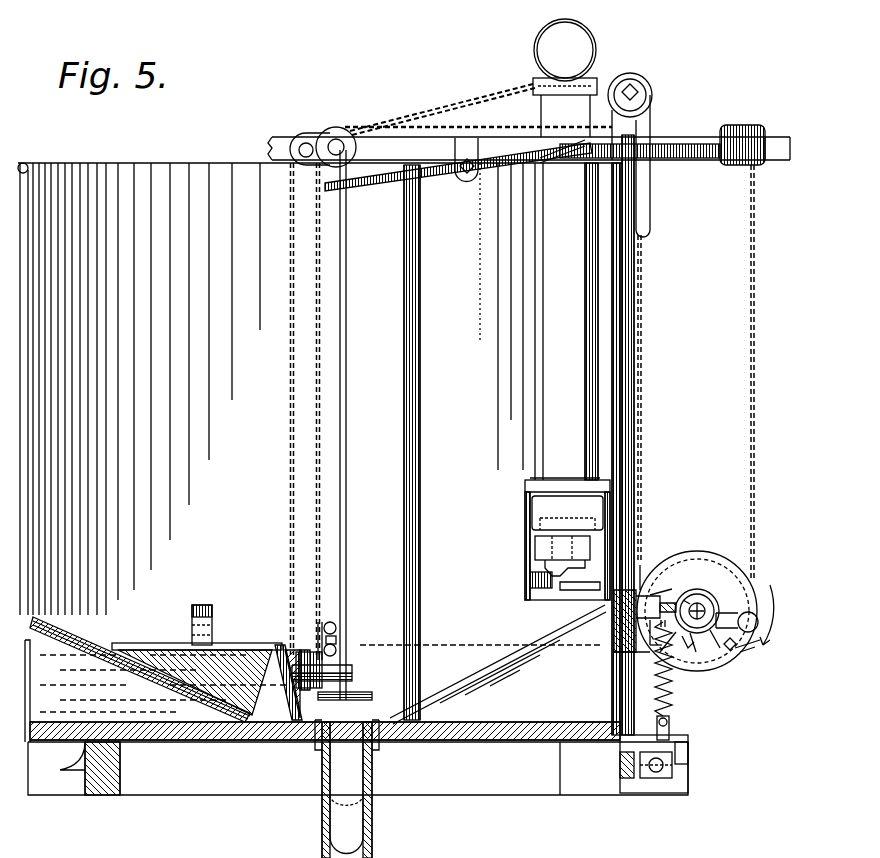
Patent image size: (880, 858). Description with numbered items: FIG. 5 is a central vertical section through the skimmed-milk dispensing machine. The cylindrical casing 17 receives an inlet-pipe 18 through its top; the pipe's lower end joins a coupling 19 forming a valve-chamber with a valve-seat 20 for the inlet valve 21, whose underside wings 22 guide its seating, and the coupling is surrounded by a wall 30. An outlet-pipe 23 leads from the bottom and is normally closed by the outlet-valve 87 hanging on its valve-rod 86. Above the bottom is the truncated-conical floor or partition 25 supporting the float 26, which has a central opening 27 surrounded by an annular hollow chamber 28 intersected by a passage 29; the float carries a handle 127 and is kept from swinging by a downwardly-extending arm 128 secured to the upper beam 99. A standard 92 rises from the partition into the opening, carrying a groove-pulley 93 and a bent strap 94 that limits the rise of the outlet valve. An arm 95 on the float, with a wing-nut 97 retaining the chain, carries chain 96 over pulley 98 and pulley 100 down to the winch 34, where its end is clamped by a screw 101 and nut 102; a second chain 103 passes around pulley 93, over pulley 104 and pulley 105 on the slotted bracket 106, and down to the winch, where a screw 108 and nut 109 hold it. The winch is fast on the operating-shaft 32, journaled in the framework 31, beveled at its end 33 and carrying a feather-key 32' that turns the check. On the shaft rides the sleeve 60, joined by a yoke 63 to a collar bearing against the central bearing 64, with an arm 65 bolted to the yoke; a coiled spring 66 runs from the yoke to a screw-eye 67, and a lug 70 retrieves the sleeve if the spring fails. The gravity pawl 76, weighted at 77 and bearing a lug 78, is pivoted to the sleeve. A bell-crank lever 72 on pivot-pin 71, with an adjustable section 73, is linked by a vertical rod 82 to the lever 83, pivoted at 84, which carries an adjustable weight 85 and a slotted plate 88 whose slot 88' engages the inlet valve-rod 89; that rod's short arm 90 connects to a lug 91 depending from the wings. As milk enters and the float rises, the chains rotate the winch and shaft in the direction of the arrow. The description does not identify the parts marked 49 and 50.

The casing 17 is at (177, 163).
The inlet-pipe 18 is at (588, 36).
The coupling 19 is at (545, 478).
The valve-seat 20 is at (532, 540).
The valve 21 is at (556, 522).
The wings 22 is at (545, 566).
The outlet-pipe 23 is at (330, 795).
The floor or partition 25 is at (78, 648).
The float 26 is at (137, 643).
The central opening 27 is at (276, 645).
The annular hollow chamber 28 is at (184, 643).
The passage 29 is at (432, 660).
The wall 30 is at (525, 520).
The framework 31 is at (640, 636).
The operating-shaft 32 is at (707, 572).
The feather-key 32' is at (786, 602).
The beveled end 33 is at (707, 560).
The winch 34 is at (725, 652).
The lever 49 is at (655, 590).
The bracket 50 is at (650, 645).
The sleeve 60 is at (702, 606).
The yoke 63 is at (680, 640).
The central bearing 64 is at (686, 570).
The arm 65 is at (664, 598).
The coiled spring 66 is at (670, 704).
The screw-eye 67 is at (672, 730).
The projecting lug 70 is at (690, 592).
The pivot-pin 71 is at (688, 760).
The bell-crank lever 72 is at (663, 778).
The adjustable section 73 is at (655, 660).
The gravity dog or pawl 76 is at (745, 656).
The weight 77 is at (758, 622).
The lug 78 is at (690, 640).
The vertical rod 82 is at (634, 412).
The lever 83 is at (708, 152).
The pivot 84 is at (466, 182).
The adjustable weight 85 is at (770, 138).
The valve-rod 86 is at (348, 410).
The outlet-valve 87 is at (375, 684).
The slotted bracket 88 is at (478, 109).
The slot 88' is at (526, 194).
The valve-rod 89 is at (592, 305).
The short arm 90 is at (580, 590).
The lug 91 is at (548, 580).
The standard 92 is at (290, 700).
The groove-pulley 93 is at (314, 645).
The bent strap 94 is at (272, 662).
The arm 95 is at (248, 640).
The chain 96 is at (322, 490).
The wing-nut 97 is at (338, 632).
The pulley 98 is at (338, 128).
The upper beam 99 is at (380, 160).
The pulley 100 is at (742, 126).
The screw 101 is at (752, 651).
The nut 102 is at (765, 640).
The chain 103 is at (290, 450).
The pulley 104 is at (302, 133).
The pulley 105 is at (632, 74).
The slotted bracket 106 is at (652, 98).
The screw 108 is at (645, 590).
The nut 109 is at (640, 565).
The handle 127 is at (206, 605).
The downwardly-extending arm 128 is at (420, 412).